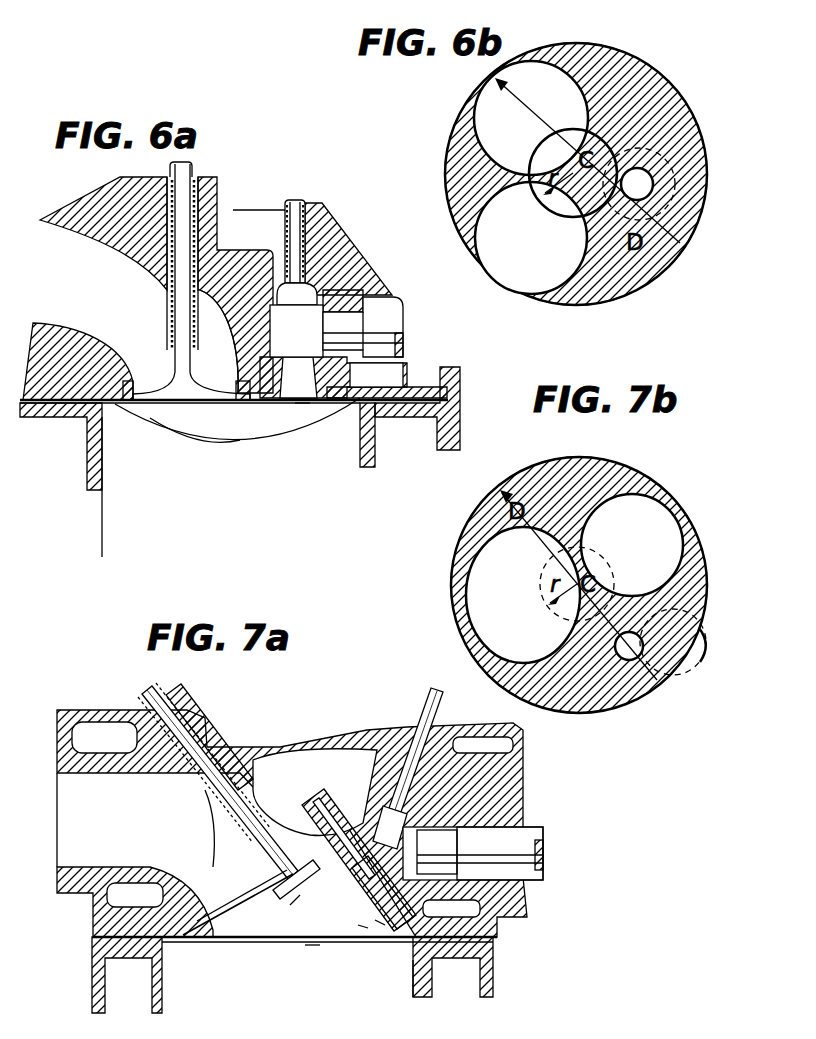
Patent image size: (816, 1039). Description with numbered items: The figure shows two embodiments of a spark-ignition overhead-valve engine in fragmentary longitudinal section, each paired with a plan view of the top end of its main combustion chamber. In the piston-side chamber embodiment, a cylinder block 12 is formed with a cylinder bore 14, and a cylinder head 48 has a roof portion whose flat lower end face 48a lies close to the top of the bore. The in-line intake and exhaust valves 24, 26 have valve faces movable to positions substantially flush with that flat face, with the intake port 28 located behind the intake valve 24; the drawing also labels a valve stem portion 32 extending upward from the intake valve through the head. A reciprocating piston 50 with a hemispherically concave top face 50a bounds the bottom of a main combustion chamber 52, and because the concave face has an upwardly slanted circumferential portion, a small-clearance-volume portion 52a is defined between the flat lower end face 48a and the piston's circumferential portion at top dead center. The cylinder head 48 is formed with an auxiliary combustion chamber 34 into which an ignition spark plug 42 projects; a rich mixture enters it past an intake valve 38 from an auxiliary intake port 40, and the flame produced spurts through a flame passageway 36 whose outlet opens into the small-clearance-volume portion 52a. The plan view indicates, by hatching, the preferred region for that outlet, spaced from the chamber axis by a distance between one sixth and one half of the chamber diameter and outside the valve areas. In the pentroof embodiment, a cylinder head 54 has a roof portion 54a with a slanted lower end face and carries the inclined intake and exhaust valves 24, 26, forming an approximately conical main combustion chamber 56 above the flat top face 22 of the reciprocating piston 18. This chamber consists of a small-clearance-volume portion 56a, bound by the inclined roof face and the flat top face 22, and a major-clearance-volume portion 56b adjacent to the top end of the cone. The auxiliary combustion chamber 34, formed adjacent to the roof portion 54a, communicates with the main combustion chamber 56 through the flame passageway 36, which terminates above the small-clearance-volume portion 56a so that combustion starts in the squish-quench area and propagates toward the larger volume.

In FIG. 6a, the cylinder block 12 is at (460, 416).
In FIG. 7a, the cylinder block 12 is at (497, 975).
In FIG. 6a, the cylinder bore 14 is at (362, 468).
In FIG. 7a, the cylinder bore 14 is at (413, 998).
In FIG. 7a, the reciprocating piston 18 is at (152, 1005).
In FIG. 7a, the top face or crown 22 is at (312, 947).
In FIG. 6a, the intake valve 24 is at (175, 357).
In FIG. 6b, the intake valve 24 is at (480, 105).
In FIG. 7b, the intake valve 24 is at (657, 510).
In FIG. 7a, the intake valve 24 is at (205, 860).
In FIG. 6b, the exhaust valve 26 is at (540, 275).
In FIG. 7b, the exhaust valve 26 is at (478, 618).
In FIG. 6a, the intake port 28 is at (78, 330).
In FIG. 7a, the intake port 28 is at (118, 864).
In FIG. 6a, the intake valve stem 32 is at (167, 200).
In FIG. 6a, the auxiliary combustion chamber 34 is at (267, 317).
In FIG. 6b, the auxiliary combustion chamber 34 is at (675, 195).
In FIG. 7b, the auxiliary combustion chamber 34 is at (694, 660).
In FIG. 7a, the auxiliary combustion chamber 34 is at (325, 830).
In FIG. 6a, the flame passageway 36 is at (285, 407).
In FIG. 6b, the flame passageway 36 is at (643, 190).
In FIG. 7b, the flame passageway 36 is at (627, 652).
In FIG. 7a, the flame passageway 36 is at (345, 900).
In FIG. 6a, the intake valve for the auxiliary combustion chamber 38 is at (310, 270).
In FIG. 6a, the auxiliary intake port 40 is at (270, 210).
In FIG. 7a, the auxiliary intake port 40 is at (525, 767).
In FIG. 6a, the ignition spark plug 42 is at (318, 342).
In FIG. 7a, the ignition spark plug 42 is at (397, 858).
In FIG. 6a, the cylinder head 48 is at (450, 372).
In FIG. 6a, the flat lower end face 48a is at (300, 405).
In FIG. 6a, the reciprocating piston 50 is at (100, 520).
In FIG. 6a, the hemispherically concave top face 50a is at (195, 440).
In FIG. 6a, the main combustion chamber 52 is at (252, 436).
In FIG. 6b, the main combustion chamber 52 is at (660, 87).
In FIG. 6a, the small-clearance-volume portion 52a is at (327, 407).
In FIG. 7a, the cylinder head 54 is at (528, 902).
In FIG. 7a, the roof portion 54a is at (380, 925).
In FIG. 7b, the main combustion chamber 56 is at (607, 708).
In FIG. 7a, the main combustion chamber 56 is at (285, 932).
In FIG. 7a, the small-clearance-volume portion 56a is at (363, 927).
In FIG. 7a, the major-clearance-volume portion 56b is at (297, 890).